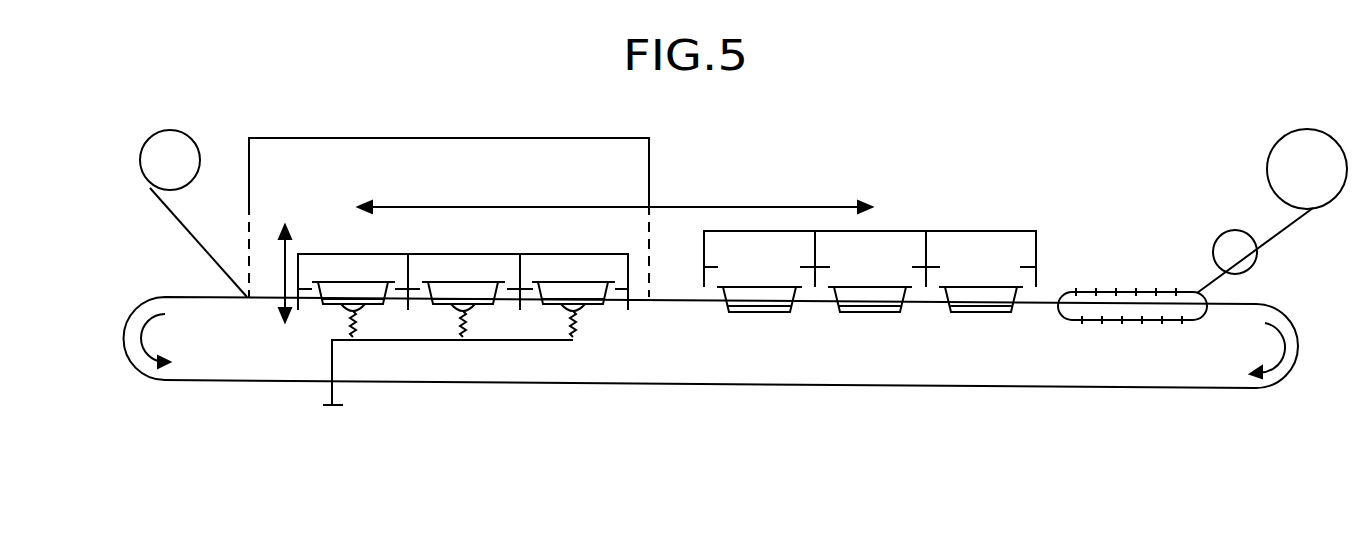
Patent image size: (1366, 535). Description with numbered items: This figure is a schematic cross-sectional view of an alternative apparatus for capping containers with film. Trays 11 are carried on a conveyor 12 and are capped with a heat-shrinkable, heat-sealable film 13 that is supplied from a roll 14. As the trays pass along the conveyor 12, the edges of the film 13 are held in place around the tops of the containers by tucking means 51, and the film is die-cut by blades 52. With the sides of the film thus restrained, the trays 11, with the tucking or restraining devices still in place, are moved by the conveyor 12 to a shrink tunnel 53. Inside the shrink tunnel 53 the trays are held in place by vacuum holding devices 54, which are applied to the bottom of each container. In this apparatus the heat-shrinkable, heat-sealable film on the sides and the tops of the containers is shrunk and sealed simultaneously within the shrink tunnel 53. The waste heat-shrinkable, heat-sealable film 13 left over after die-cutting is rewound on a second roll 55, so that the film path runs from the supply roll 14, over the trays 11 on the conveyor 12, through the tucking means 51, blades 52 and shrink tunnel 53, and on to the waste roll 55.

The trays 11 is at (780, 312).
The conveyor 12 is at (1135, 388).
The film 13 is at (1287, 232).
The roll 14 is at (1284, 140).
The tucking means 51 is at (1020, 267).
The blades 52 is at (1040, 275).
The shrink tunnel 53 is at (622, 140).
The vacuum holding devices 54 is at (560, 312).
The roll 55 is at (148, 132).